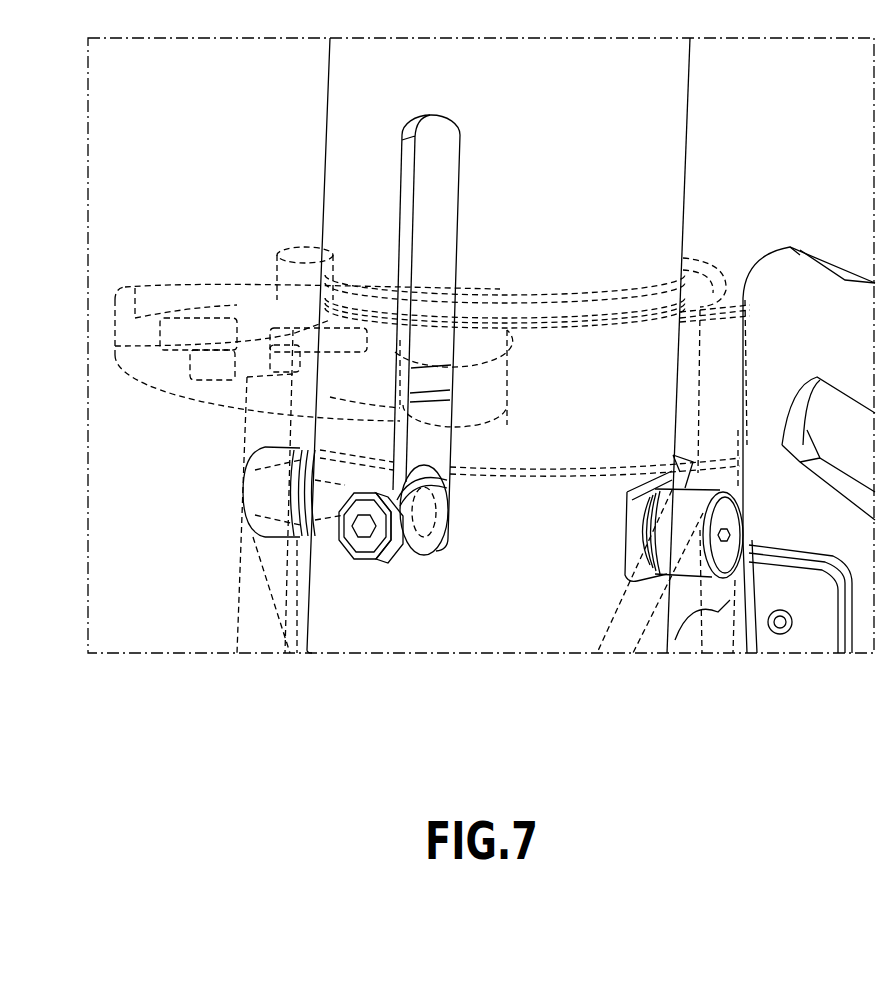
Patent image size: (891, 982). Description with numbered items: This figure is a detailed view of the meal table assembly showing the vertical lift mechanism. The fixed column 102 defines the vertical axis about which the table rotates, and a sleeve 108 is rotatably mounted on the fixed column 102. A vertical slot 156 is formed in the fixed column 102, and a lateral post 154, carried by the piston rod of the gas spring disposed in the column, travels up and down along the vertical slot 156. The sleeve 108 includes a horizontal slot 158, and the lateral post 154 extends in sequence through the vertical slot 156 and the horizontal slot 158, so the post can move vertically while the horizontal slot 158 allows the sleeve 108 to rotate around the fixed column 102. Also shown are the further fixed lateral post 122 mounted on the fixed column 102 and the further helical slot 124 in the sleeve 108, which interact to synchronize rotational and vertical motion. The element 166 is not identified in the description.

The fixed column 102 is at (348, 100).
The vertical slot 156 is at (432, 204).
The sleeve 108 is at (298, 290).
The clamp body 166 is at (122, 335).
The further fixed lateral post 122 is at (247, 490).
The horizontal slot 158 is at (325, 503).
The lateral post 154 is at (345, 530).
The further helical slot 124 is at (268, 592).